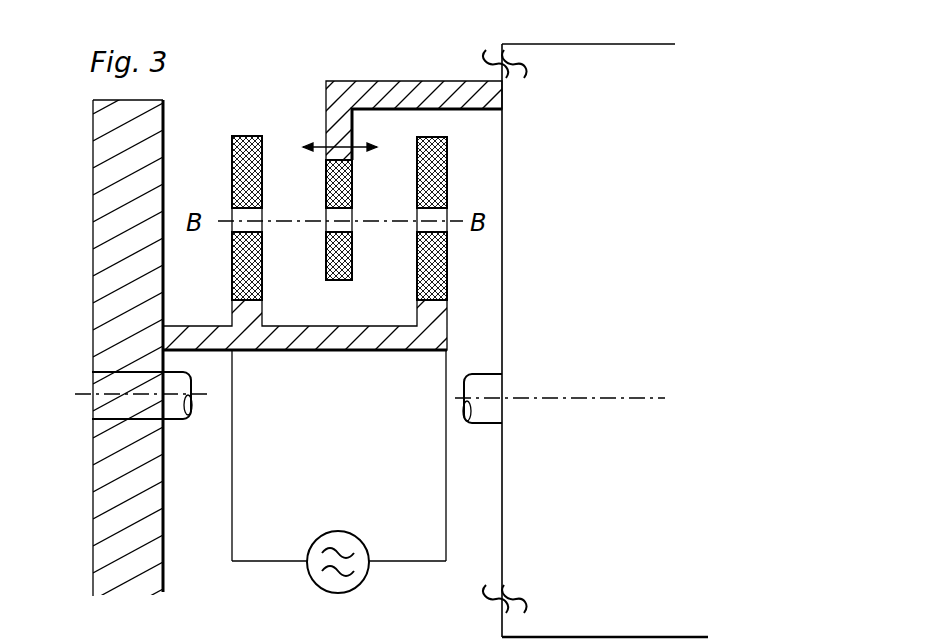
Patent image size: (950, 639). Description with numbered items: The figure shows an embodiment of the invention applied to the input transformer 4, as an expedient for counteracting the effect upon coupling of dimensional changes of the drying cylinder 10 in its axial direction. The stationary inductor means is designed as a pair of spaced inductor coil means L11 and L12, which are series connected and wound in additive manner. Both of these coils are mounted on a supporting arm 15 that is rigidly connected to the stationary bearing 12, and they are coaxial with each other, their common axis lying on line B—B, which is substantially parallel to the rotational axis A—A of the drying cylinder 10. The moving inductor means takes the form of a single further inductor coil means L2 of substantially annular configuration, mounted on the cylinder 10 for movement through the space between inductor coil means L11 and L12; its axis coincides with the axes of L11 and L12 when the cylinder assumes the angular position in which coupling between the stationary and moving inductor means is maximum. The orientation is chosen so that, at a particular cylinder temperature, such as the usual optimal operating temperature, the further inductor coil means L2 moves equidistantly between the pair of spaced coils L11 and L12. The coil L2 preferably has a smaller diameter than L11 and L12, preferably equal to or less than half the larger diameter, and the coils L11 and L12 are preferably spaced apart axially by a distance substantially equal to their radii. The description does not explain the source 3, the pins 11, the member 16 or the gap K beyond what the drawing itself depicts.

The alternating current source 3 is at (338, 542).
The input transformer 4 is at (268, 97).
The drying cylinder 10 is at (528, 540).
The pivot pins 11 is at (167, 408).
The stationary bearing 12 is at (145, 547).
The supporting arm 15 is at (313, 350).
The movable armature 16 is at (378, 93).
The air gap K is at (350, 145).
The inductor coil means L11 is at (232, 275).
The further inductor coil means L2 is at (325, 278).
The inductor coil means L12 is at (447, 273).